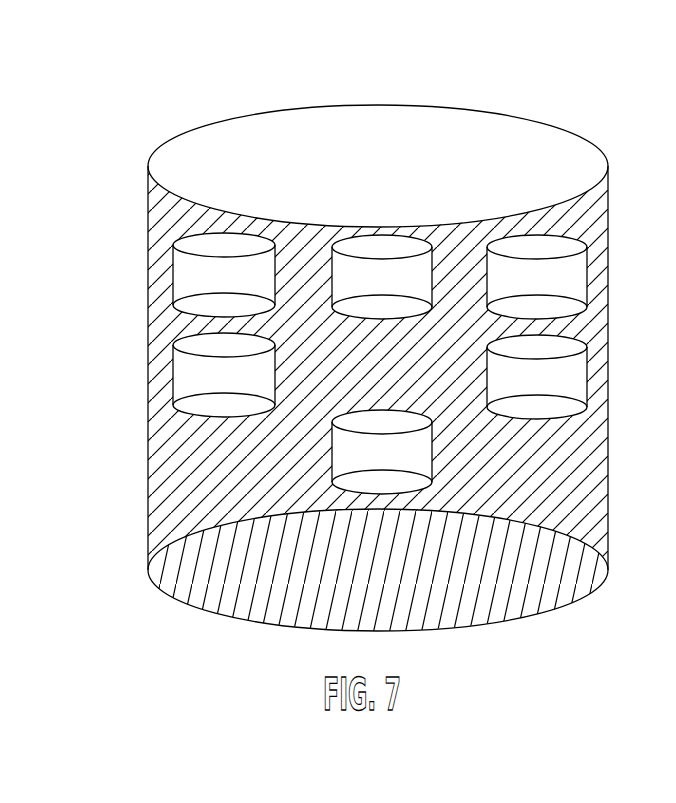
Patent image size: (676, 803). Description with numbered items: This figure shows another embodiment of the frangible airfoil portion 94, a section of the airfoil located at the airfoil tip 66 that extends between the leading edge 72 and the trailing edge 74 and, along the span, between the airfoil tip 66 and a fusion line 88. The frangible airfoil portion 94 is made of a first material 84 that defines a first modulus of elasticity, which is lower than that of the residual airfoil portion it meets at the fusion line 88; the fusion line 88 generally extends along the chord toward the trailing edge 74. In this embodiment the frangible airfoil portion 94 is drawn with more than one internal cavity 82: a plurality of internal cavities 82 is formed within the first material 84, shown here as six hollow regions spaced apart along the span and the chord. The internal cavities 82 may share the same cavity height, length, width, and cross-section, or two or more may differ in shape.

The airfoil tip 66 is at (527, 127).
The leading edge 72 is at (150, 400).
The trailing edge 74 is at (608, 522).
The internal cavity 82 is at (642, 262).
The first material 84 is at (163, 325).
The fusion line 88 is at (162, 583).
The frangible airfoil portion 94 is at (150, 140).